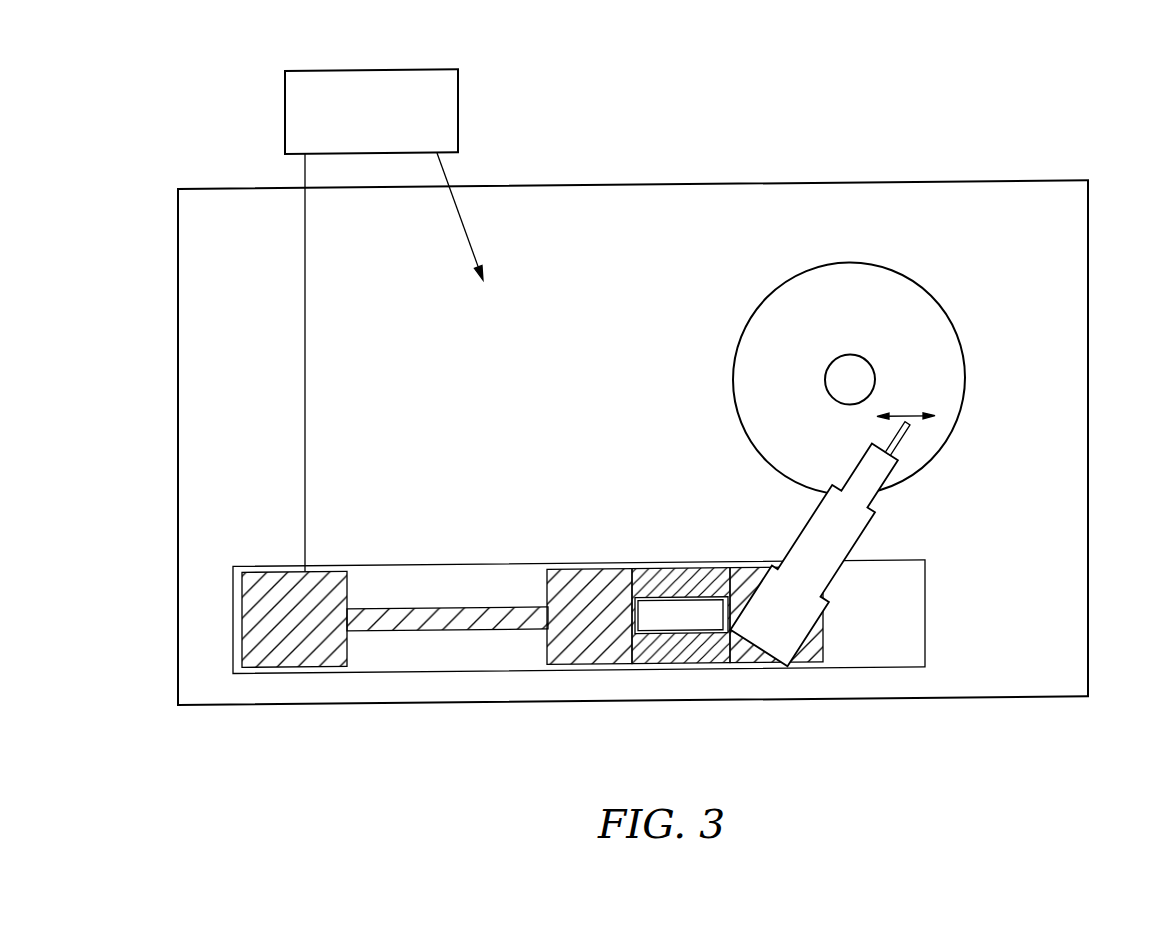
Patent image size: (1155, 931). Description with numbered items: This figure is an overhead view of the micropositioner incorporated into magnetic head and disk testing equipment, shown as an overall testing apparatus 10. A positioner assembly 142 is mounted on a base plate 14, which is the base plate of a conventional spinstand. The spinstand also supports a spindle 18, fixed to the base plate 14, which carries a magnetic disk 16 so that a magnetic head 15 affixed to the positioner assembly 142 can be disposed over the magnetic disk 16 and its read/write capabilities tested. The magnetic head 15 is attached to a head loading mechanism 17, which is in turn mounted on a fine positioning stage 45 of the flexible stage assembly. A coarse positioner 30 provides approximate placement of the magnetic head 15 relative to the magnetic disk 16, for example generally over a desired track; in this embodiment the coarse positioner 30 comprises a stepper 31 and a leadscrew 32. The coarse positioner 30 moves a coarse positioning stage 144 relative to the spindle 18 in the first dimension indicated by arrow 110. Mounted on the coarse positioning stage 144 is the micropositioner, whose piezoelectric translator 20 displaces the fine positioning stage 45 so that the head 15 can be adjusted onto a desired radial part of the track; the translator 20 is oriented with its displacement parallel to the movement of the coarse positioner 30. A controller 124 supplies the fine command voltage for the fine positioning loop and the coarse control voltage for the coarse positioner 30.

The optical data storage system 10 is at (627, 384).
The base plate 14 is at (666, 442).
The controller 124 is at (372, 87).
The magnetic disk 16 is at (825, 378).
The spindle 18 is at (920, 342).
The first dimension 110 is at (956, 381).
The magnetic head 15 is at (932, 457).
The head loading mechanism 17 is at (829, 555).
The coarse positioner 30 is at (579, 656).
The stepper 31 is at (288, 589).
The leadscrew 32 is at (447, 576).
The coarse positioning stage 144 is at (685, 611).
The fine positioning stage 45 is at (758, 581).
The piezoelectric translator 20 is at (681, 669).
The positioner assembly 142 is at (464, 720).